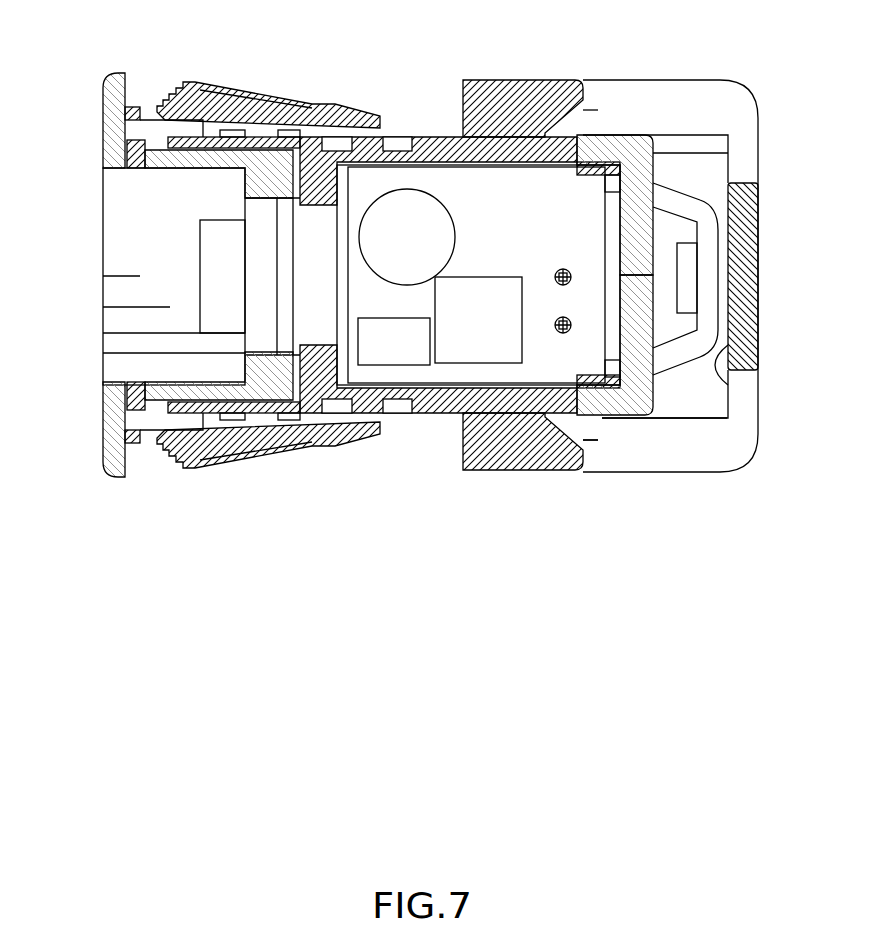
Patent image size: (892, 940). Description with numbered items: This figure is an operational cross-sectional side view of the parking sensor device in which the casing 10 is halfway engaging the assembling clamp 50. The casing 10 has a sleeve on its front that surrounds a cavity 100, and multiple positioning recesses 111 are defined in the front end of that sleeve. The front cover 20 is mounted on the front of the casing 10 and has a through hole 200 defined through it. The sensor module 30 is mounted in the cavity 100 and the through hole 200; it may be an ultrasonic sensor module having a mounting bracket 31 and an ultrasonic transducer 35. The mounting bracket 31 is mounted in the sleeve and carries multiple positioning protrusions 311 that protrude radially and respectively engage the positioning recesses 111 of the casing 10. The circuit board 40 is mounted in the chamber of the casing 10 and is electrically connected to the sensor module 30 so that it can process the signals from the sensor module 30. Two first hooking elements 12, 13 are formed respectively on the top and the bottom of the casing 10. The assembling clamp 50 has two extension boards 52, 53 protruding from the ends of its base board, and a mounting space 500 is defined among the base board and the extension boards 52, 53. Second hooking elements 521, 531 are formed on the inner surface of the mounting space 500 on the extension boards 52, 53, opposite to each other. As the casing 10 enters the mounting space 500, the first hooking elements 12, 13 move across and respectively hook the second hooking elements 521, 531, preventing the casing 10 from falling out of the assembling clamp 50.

The casing 10 is at (422, 122).
The first hooking element 12 is at (510, 125).
The first hooking element 13 is at (496, 443).
The front cover 20 is at (226, 90).
The sensor module 30 is at (84, 240).
The mounting bracket 31 is at (283, 390).
The ultrasonic transducer 35 is at (125, 289).
The circuit board 40 is at (450, 355).
The assembling clamp 50 is at (772, 219).
The extension board 52 is at (703, 98).
The extension board 53 is at (665, 458).
The cavity 100 is at (256, 396).
The positioning recess 111 is at (172, 403).
The through hole 200 is at (163, 125).
The positioning protrusion 311 is at (153, 403).
The mounting space 500 is at (713, 352).
The second hooking element 521 is at (543, 130).
The second hooking element 531 is at (550, 460).